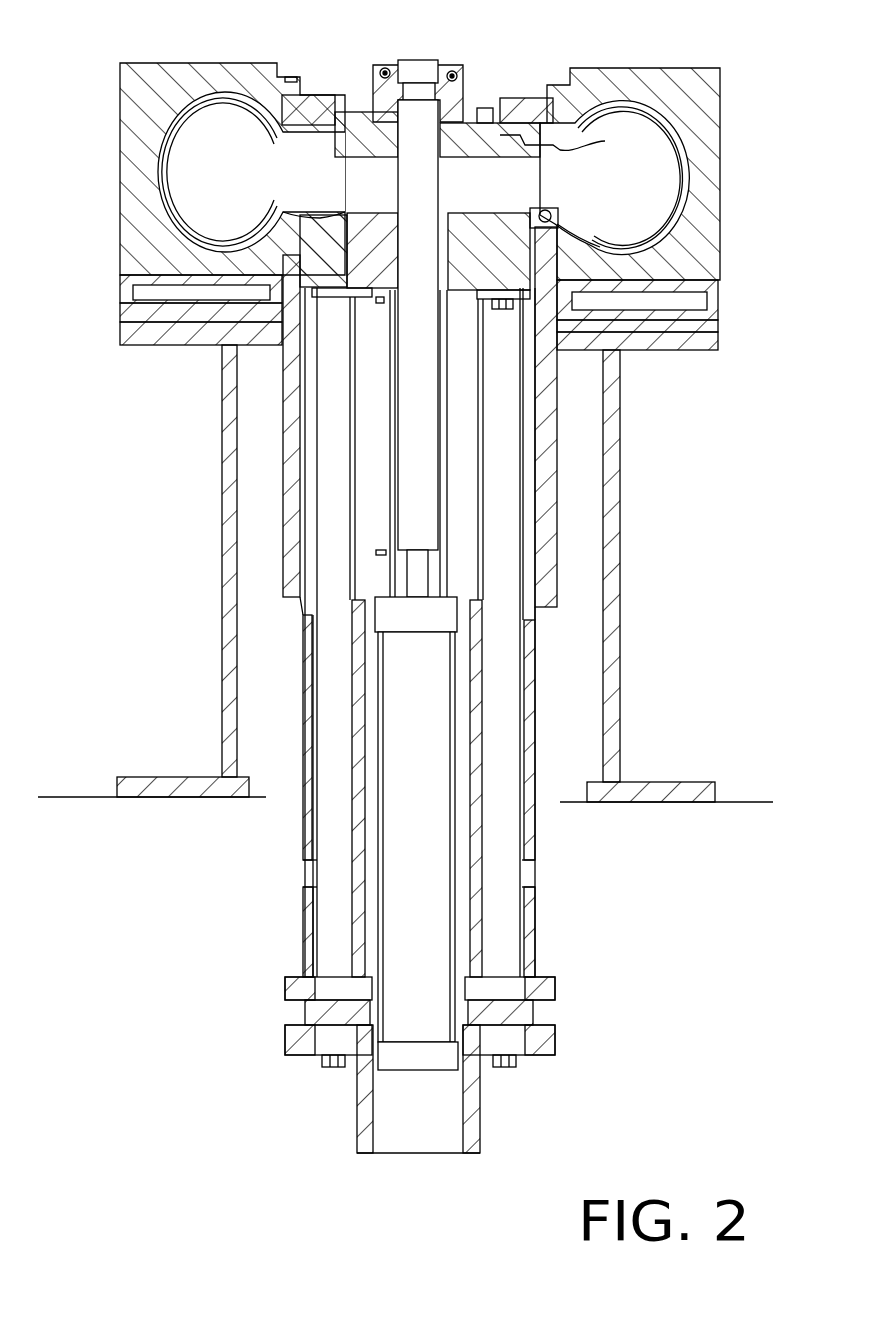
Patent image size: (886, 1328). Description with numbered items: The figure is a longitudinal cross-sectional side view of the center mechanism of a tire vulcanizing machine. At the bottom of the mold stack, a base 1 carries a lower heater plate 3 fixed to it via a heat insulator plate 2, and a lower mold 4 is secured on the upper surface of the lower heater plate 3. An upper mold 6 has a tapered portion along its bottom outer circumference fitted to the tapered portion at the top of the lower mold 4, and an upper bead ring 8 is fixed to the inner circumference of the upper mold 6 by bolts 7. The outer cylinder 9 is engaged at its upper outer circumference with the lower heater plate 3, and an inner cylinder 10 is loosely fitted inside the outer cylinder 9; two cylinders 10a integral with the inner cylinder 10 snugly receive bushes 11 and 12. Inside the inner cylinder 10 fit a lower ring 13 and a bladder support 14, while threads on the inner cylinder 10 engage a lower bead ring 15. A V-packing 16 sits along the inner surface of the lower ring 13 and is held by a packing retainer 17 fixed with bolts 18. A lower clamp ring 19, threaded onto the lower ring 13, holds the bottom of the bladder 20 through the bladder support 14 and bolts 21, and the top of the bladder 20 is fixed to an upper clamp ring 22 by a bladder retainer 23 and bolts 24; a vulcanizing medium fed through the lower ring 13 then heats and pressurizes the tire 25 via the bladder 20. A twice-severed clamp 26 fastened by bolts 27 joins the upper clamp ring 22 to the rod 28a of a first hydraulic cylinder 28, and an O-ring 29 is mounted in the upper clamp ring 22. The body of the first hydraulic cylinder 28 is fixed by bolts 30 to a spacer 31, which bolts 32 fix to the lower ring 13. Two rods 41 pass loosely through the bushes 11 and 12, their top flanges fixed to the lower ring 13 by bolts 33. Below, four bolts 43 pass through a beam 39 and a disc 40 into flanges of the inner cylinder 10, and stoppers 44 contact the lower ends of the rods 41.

The base 1 is at (718, 344).
The heat insulator plate 2 is at (718, 323).
The lower heater plate 3 is at (716, 302).
The lower mold 4 is at (705, 250).
The upper mold 6 is at (700, 185).
The bolts 7 is at (291, 77).
The upper bead ring 8 is at (320, 95).
The outer cylinder 9 is at (557, 580).
The inner cylinder 10 is at (538, 630).
The cylinders 10a is at (536, 860).
The bush 11 is at (460, 562).
The bush 12 is at (525, 930).
The lower ring 13 is at (350, 297).
The bladder support 14 is at (315, 215).
The lower bead ring 15 is at (558, 224).
The V-packing 16 is at (440, 245).
The packing retainer 17 is at (375, 213).
The bolts 18 is at (490, 213).
The lower clamp ring 19 is at (538, 210).
The bladder 20 is at (672, 174).
The bolts 21 is at (470, 299).
The upper clamp ring 22 is at (553, 150).
The bladder retainer 23 is at (360, 112).
The bolts 24 is at (492, 105).
The tire 25 is at (682, 140).
The twice-severed clamp 26 is at (463, 70).
The bolts 27 is at (457, 76).
The first hydraulic cylinder 28 is at (420, 1070).
The rod 28a is at (420, 60).
The O-ring 29 is at (478, 160).
The bolts 30 is at (378, 556).
The spacer 31 is at (390, 488).
The bolts 32 is at (380, 303).
The bolts 33 is at (500, 309).
The beam 39 is at (556, 1045).
The disc 40 is at (556, 989).
The rods 41 is at (305, 846).
The bolts 43 is at (332, 1068).
The stoppers 44 is at (540, 1016).